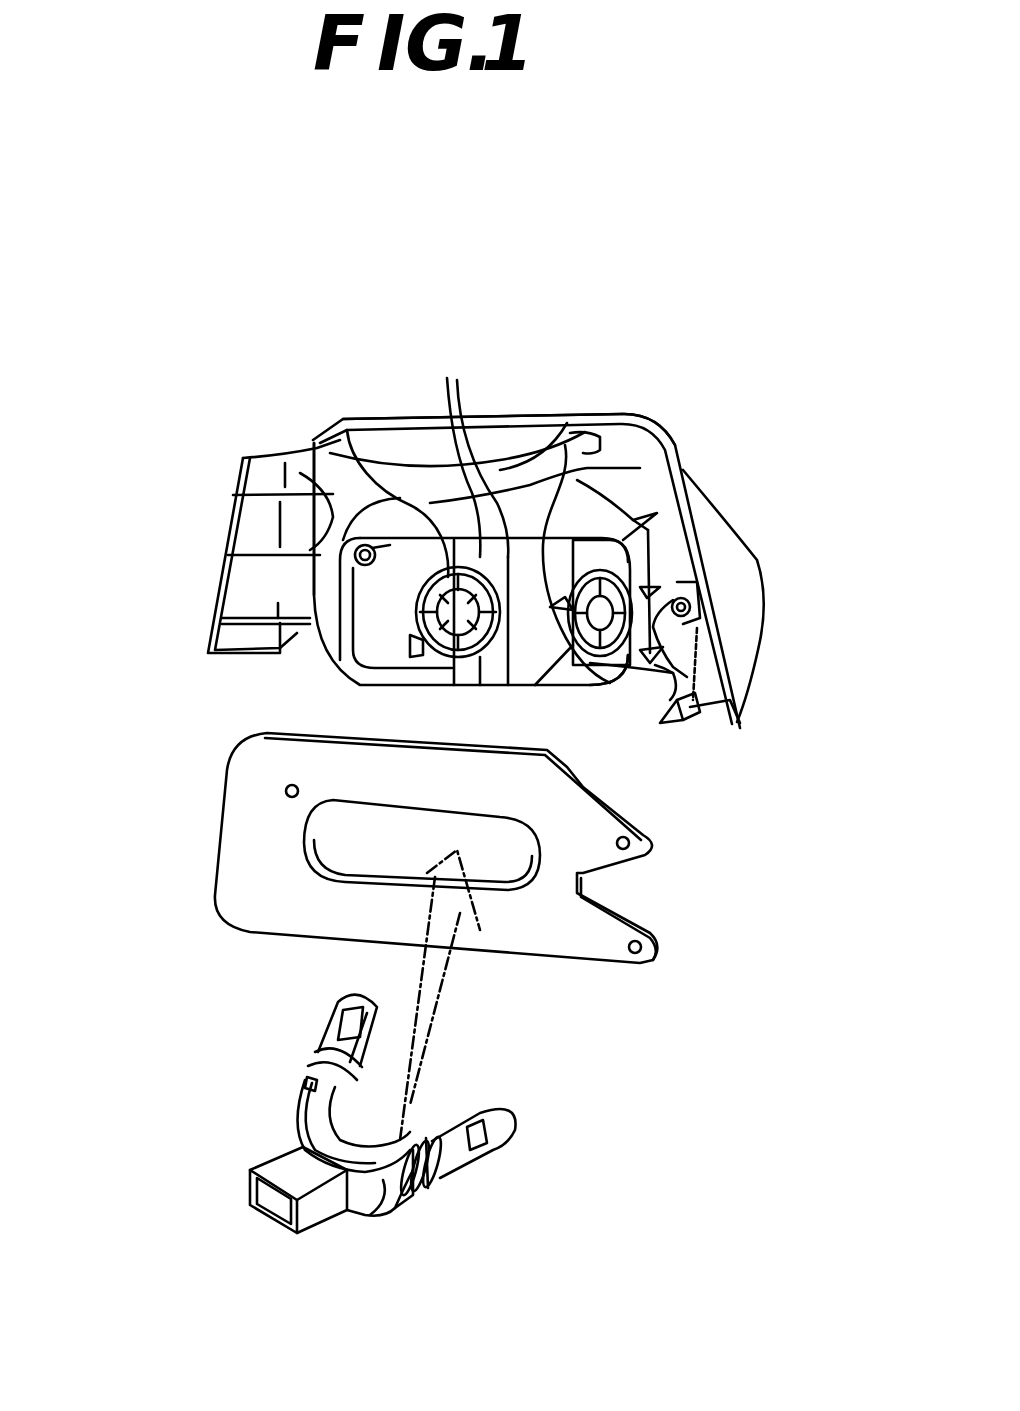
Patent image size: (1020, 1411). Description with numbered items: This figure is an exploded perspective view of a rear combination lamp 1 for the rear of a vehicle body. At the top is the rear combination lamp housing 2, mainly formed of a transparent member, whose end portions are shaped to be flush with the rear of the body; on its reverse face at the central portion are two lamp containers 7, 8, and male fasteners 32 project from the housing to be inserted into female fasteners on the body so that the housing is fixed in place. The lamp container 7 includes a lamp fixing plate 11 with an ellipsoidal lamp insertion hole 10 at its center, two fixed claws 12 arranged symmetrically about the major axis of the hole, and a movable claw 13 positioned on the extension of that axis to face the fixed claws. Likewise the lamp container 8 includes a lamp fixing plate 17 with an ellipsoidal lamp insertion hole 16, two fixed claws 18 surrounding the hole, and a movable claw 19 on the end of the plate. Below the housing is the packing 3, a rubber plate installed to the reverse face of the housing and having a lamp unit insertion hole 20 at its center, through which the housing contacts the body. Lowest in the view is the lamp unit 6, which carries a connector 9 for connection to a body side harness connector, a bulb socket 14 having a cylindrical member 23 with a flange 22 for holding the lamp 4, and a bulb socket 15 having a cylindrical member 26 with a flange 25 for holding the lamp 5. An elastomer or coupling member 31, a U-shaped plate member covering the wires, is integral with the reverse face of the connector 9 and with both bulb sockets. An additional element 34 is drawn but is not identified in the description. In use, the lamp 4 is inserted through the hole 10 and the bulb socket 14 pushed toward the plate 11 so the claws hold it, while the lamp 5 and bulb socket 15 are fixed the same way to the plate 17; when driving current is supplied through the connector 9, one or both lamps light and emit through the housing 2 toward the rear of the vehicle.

The rear combination lamp 1 is at (586, 390).
The rear combination lamp housing 2 is at (647, 413).
The packing 3 is at (384, 893).
The lamp 4 is at (337, 1000).
The lamp 5 is at (508, 1117).
The lamp unit 6 is at (354, 1150).
The lamp container 7 is at (420, 640).
The lamp container 8 is at (610, 683).
The connector 9 is at (320, 1232).
The lamp insertion hole 10 is at (356, 440).
The lamp fixing plate 11 is at (415, 613).
The fixed claws 12 is at (452, 440).
The movable claw 13 is at (322, 556).
The bulb socket 14 is at (293, 1113).
The bulb socket 15 is at (448, 1229).
The lamp insertion hole 16 is at (662, 677).
The lamp fixing plate 17 is at (680, 665).
The fixed claws 18 is at (565, 445).
The movable claw 19 is at (643, 600).
The lamp unit insertion hole 20 is at (304, 840).
The flange 22 is at (300, 1073).
The cylindrical member 23 is at (327, 1050).
The flange 25 is at (450, 1167).
The cylindrical member 26 is at (427, 1137).
The elastomer or coupling member 31 is at (375, 1210).
The male fasteners 32 is at (314, 445).
The pipe 34 is at (337, 1137).